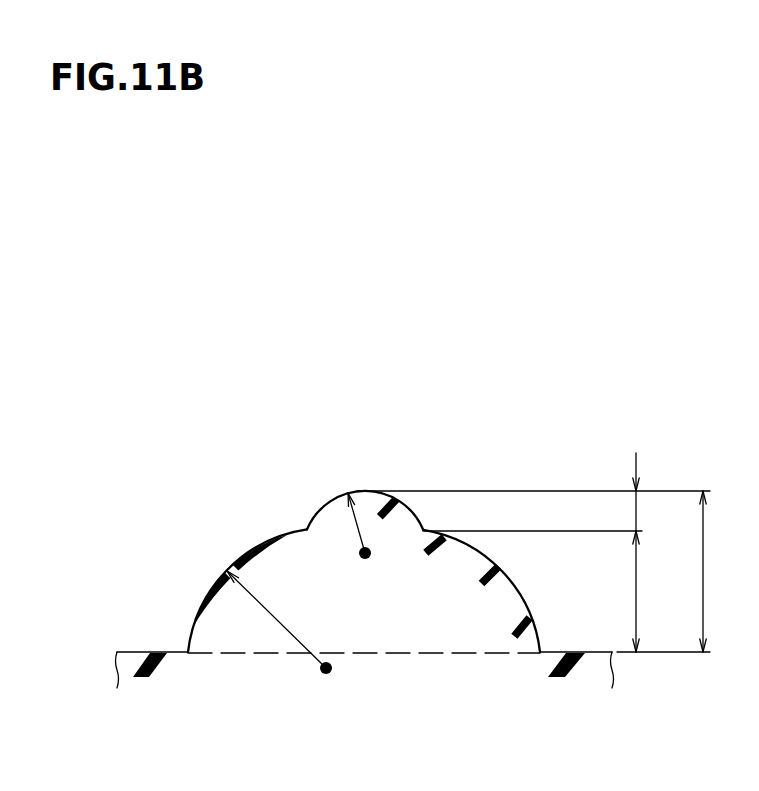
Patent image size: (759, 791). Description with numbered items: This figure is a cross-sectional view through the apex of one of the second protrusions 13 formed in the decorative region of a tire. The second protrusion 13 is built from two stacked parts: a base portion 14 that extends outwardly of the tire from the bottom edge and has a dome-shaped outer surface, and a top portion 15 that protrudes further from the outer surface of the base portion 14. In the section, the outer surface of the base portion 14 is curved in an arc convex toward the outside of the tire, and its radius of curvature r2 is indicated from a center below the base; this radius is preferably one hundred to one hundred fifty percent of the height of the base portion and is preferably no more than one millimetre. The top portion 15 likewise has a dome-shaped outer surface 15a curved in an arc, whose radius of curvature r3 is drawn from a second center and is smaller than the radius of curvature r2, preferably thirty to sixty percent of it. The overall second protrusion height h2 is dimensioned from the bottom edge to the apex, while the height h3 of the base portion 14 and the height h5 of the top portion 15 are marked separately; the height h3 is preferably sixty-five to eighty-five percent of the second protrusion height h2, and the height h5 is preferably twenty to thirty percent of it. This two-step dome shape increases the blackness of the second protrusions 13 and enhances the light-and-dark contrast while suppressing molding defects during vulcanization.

The second protrusion 13 is at (272, 462).
The base portion 14 is at (250, 551).
The top portion 15 is at (366, 490).
The outer surface of the top portion 15a is at (333, 499).
The radius of curvature of the outer surface of the base portion r2 is at (292, 632).
The radius of curvature of the outer surface of the top portion r3 is at (358, 531).
The second protrusion height h2 is at (721, 571).
The height of the base portion h3 is at (663, 591).
The height of the top portion h5 is at (533, 498).